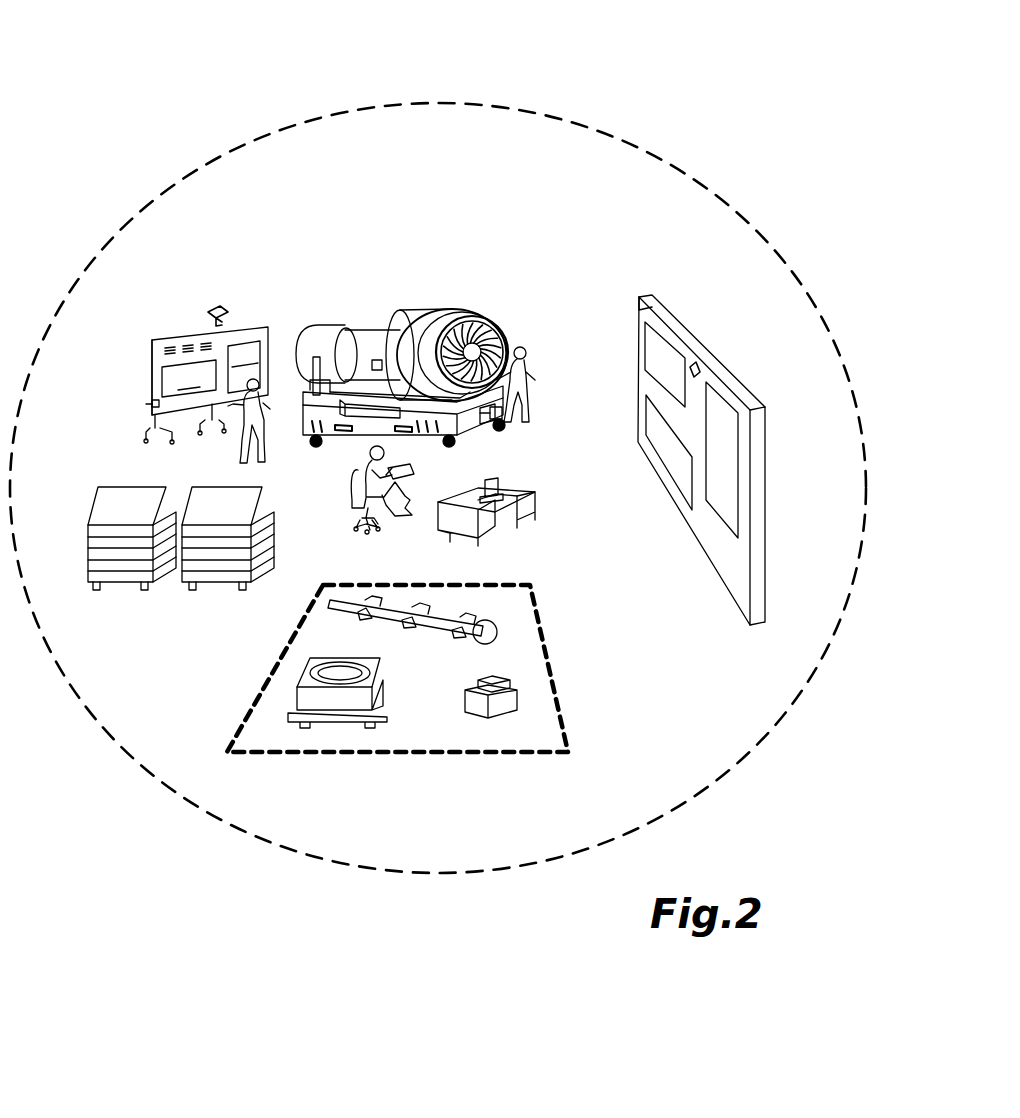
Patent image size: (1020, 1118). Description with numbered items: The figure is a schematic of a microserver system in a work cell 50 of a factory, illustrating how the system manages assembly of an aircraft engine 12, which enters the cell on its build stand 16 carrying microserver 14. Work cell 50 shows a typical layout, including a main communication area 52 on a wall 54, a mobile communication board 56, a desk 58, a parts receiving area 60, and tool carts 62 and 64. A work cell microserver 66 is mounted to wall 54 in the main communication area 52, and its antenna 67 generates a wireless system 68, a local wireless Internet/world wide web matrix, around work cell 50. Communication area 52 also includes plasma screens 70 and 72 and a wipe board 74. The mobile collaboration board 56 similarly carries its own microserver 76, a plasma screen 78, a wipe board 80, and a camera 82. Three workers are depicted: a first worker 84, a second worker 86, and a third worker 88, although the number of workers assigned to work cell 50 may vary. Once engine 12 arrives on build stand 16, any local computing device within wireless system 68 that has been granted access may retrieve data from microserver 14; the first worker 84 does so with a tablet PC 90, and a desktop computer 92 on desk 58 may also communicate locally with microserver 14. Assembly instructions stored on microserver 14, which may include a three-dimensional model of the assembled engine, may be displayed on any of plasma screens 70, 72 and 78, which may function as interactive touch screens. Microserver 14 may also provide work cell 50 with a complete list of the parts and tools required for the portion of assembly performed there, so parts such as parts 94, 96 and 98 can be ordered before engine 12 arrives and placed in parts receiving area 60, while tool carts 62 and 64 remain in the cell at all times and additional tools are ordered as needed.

The work cell 50 is at (641, 106).
The wireless system 68 is at (160, 197).
The camera 82 is at (220, 306).
The mobile communication board 56 is at (158, 342).
The engine 12 is at (363, 345).
The third worker 88 is at (524, 368).
The work cell microserver 66 is at (643, 298).
The antenna 67 is at (700, 368).
The plasma screen 70 is at (647, 366).
The wipe board 80 is at (244, 367).
The plasma screen 78 is at (189, 378).
The microserver 76 is at (152, 402).
The microserver 14 is at (530, 420).
The wipe board 74 is at (722, 440).
The plasma screen 72 is at (675, 462).
The first worker 84 is at (243, 452).
The build stand 16 is at (352, 425).
The second worker 86 is at (352, 496).
The tablet PC 90 is at (414, 472).
The desktop computer 92 is at (494, 478).
The desk 58 is at (520, 485).
The tool cart 62 is at (108, 512).
The tool cart 64 is at (272, 540).
The parts receiving area 60 is at (532, 600).
The part 96 is at (498, 630).
The part 94 is at (373, 672).
The part 98 is at (476, 700).
The main communication area 52 is at (685, 587).
The wall 54 is at (756, 575).